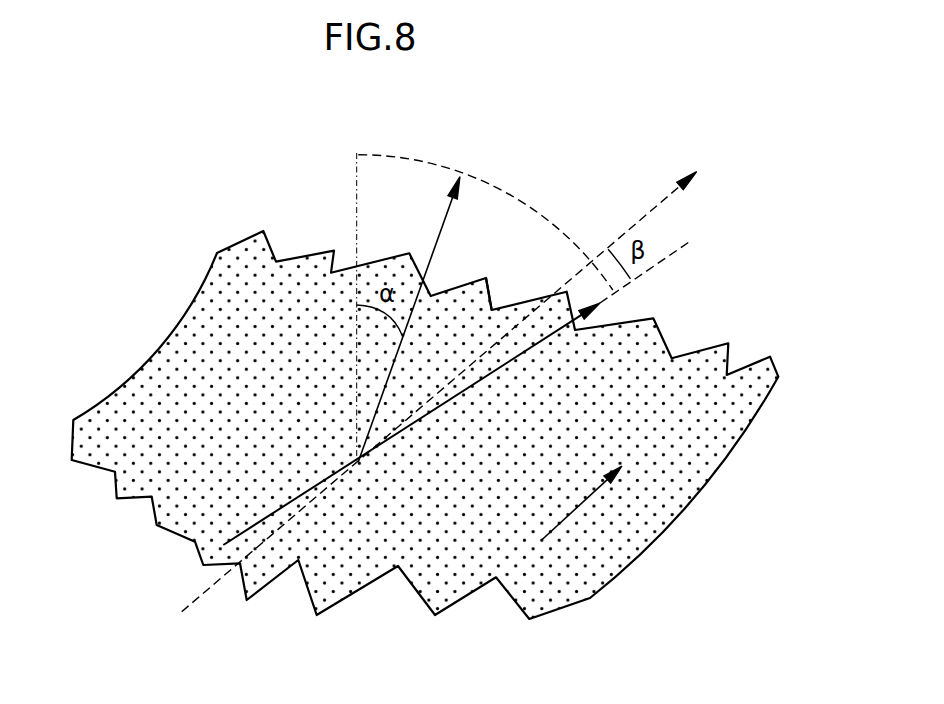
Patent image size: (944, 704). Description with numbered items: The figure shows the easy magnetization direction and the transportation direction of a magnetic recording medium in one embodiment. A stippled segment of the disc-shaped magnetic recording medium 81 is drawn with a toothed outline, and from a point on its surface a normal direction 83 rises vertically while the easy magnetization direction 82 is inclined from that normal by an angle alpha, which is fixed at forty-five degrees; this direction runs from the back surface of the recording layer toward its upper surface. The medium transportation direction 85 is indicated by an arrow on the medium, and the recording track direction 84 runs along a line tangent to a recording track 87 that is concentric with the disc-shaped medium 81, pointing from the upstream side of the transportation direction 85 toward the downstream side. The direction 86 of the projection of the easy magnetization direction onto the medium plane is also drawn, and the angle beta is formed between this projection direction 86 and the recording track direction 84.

The disc-shaped magnetic recording medium 81 is at (203, 388).
The easy magnetization direction 82 is at (422, 302).
The normal direction 83 is at (357, 292).
The recording track direction 84 is at (455, 380).
The medium transportation direction 85 is at (582, 503).
The direction of the projection of the easy magnetization direction 86 is at (457, 392).
The recording track 87 is at (492, 310).